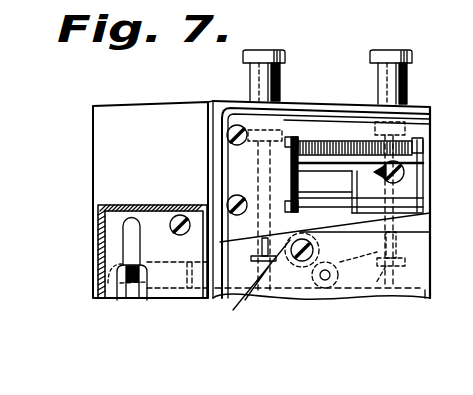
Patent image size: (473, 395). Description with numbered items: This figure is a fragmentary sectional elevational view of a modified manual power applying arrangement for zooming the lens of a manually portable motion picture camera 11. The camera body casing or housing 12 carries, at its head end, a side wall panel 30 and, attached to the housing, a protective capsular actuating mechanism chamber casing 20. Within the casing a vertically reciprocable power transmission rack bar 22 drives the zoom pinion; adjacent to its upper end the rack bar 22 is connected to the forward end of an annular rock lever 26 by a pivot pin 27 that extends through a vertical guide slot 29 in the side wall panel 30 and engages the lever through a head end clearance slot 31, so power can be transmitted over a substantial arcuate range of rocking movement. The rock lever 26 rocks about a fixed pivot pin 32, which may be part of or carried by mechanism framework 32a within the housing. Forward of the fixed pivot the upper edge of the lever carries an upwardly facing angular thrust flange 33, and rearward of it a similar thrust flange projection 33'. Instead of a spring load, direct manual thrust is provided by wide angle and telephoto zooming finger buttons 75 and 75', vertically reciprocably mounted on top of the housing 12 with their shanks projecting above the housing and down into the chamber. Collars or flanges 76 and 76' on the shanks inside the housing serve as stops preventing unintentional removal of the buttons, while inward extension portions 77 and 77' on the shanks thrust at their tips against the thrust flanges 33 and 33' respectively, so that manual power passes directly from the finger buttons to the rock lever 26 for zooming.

The motion picture camera 11 is at (113, 99).
The body casing or housing 12 is at (221, 100).
The side wall panel 30 is at (112, 147).
The actuating mechanism chamber casing 20 is at (158, 207).
The vertical guide slot 29 is at (128, 244).
The pivot pin 27 is at (141, 272).
The head end clearance slot 31 is at (118, 284).
The power transmission rack bar 22 is at (131, 298).
The angular thrust flange 33 is at (242, 284).
The rock lever 26 is at (282, 283).
The fixed pivot pin 32 is at (324, 280).
The mechanism framework 32a is at (425, 300).
The angular thrust flange projection 33' is at (380, 264).
The inward extension portion 77 is at (243, 225).
The inward extension portion 77' is at (436, 186).
The wide angle zooming finger button 75 is at (275, 59).
The telephoto zooming finger button 75' is at (403, 61).
The collar or flange 76 is at (284, 183).
The collar or flange 76' is at (370, 182).